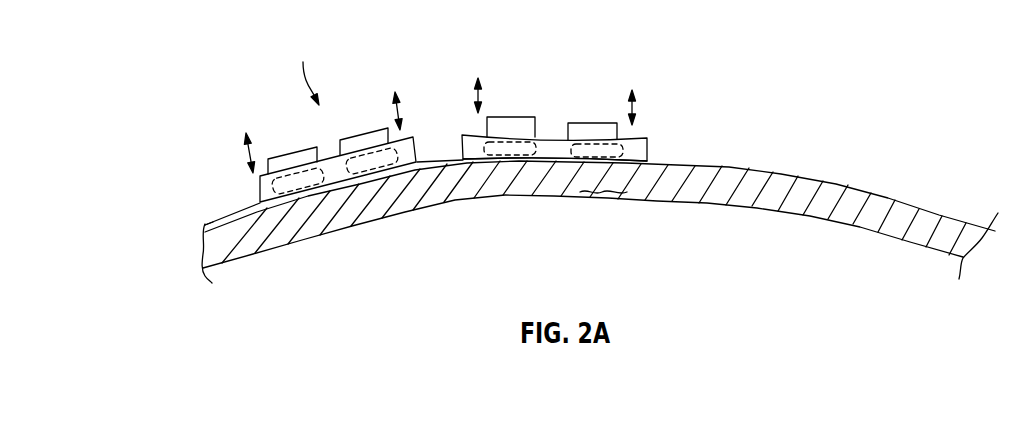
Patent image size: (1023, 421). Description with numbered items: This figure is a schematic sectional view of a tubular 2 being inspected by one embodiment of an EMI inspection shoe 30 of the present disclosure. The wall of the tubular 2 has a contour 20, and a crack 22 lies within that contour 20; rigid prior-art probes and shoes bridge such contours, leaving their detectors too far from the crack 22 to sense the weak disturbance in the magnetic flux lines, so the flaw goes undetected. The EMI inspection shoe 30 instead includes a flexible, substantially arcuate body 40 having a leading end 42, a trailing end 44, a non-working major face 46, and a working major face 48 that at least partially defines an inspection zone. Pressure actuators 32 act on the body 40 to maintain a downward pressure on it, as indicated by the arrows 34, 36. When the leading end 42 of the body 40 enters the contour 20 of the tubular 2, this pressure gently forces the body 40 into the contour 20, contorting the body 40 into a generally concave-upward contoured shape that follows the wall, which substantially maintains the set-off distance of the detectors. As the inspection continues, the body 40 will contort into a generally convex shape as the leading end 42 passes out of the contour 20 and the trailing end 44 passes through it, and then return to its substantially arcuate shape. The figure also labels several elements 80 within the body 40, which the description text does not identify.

The tubular 2 is at (236, 256).
The contour 20 is at (669, 162).
The crack 22 is at (598, 194).
The EMI inspection shoe 30 is at (303, 69).
The pressure actuators 32 is at (291, 153).
The arrow 34 is at (240, 157).
The arrow 36 is at (404, 111).
The flexible, substantially arcuate body 40 is at (252, 194).
The leading end 42 is at (418, 148).
The trailing end 44 is at (205, 229).
The non-working major face 46 is at (549, 136).
The working major face 48 is at (547, 163).
The electronic components 80 is at (308, 196).